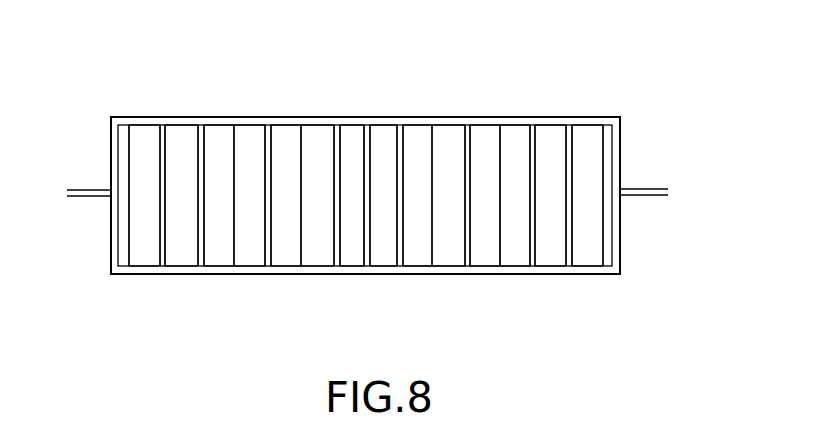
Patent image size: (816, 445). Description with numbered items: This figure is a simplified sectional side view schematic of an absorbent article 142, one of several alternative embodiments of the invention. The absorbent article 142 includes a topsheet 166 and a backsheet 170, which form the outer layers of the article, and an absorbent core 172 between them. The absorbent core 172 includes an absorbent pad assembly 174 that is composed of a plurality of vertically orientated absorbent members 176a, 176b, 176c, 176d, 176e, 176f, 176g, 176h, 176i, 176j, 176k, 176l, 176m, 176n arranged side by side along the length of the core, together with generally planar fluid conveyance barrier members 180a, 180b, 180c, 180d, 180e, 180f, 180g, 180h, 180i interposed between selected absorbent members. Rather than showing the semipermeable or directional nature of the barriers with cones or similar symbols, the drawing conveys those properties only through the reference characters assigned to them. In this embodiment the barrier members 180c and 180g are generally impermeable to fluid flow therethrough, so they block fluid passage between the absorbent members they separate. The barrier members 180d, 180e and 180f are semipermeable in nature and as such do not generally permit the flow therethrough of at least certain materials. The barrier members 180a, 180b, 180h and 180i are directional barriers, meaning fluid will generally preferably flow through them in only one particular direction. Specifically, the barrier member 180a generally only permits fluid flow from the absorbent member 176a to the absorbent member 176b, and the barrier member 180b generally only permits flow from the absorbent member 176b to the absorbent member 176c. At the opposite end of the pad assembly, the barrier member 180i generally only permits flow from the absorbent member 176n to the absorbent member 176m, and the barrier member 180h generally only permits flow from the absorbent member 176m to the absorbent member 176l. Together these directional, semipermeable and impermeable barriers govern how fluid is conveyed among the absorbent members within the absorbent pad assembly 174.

The absorbent article 142 is at (598, 76).
The topsheet 166 is at (110, 150).
The backsheet 170 is at (110, 256).
The absorbent core 172 is at (146, 250).
The absorbent pad assembly 174 is at (592, 250).
The absorbent member 176a is at (147, 138).
The absorbent member 176b is at (181, 138).
The absorbent member 176c is at (218, 138).
The absorbent member 176d is at (250, 138).
The absorbent member 176e is at (285, 138).
The absorbent member 176f is at (318, 140).
The absorbent member 176g is at (352, 138).
The absorbent member 176h is at (385, 135).
The absorbent member 176i is at (417, 138).
The absorbent member 176j is at (452, 138).
The absorbent member 176k is at (487, 140).
The absorbent member 176l is at (517, 135).
The absorbent member 176m is at (552, 138).
The absorbent member 176n is at (595, 138).
The fluid conveyance barrier member 180a is at (163, 268).
The fluid conveyance barrier member 180b is at (200, 268).
The fluid conveyance barrier member 180c is at (268, 268).
The fluid conveyance barrier member 180d is at (337, 268).
The fluid conveyance barrier member 180e is at (367, 268).
The fluid conveyance barrier member 180f is at (402, 270).
The fluid conveyance barrier member 180g is at (468, 268).
The fluid conveyance barrier member 180h is at (533, 268).
The fluid conveyance barrier member 180i is at (570, 268).